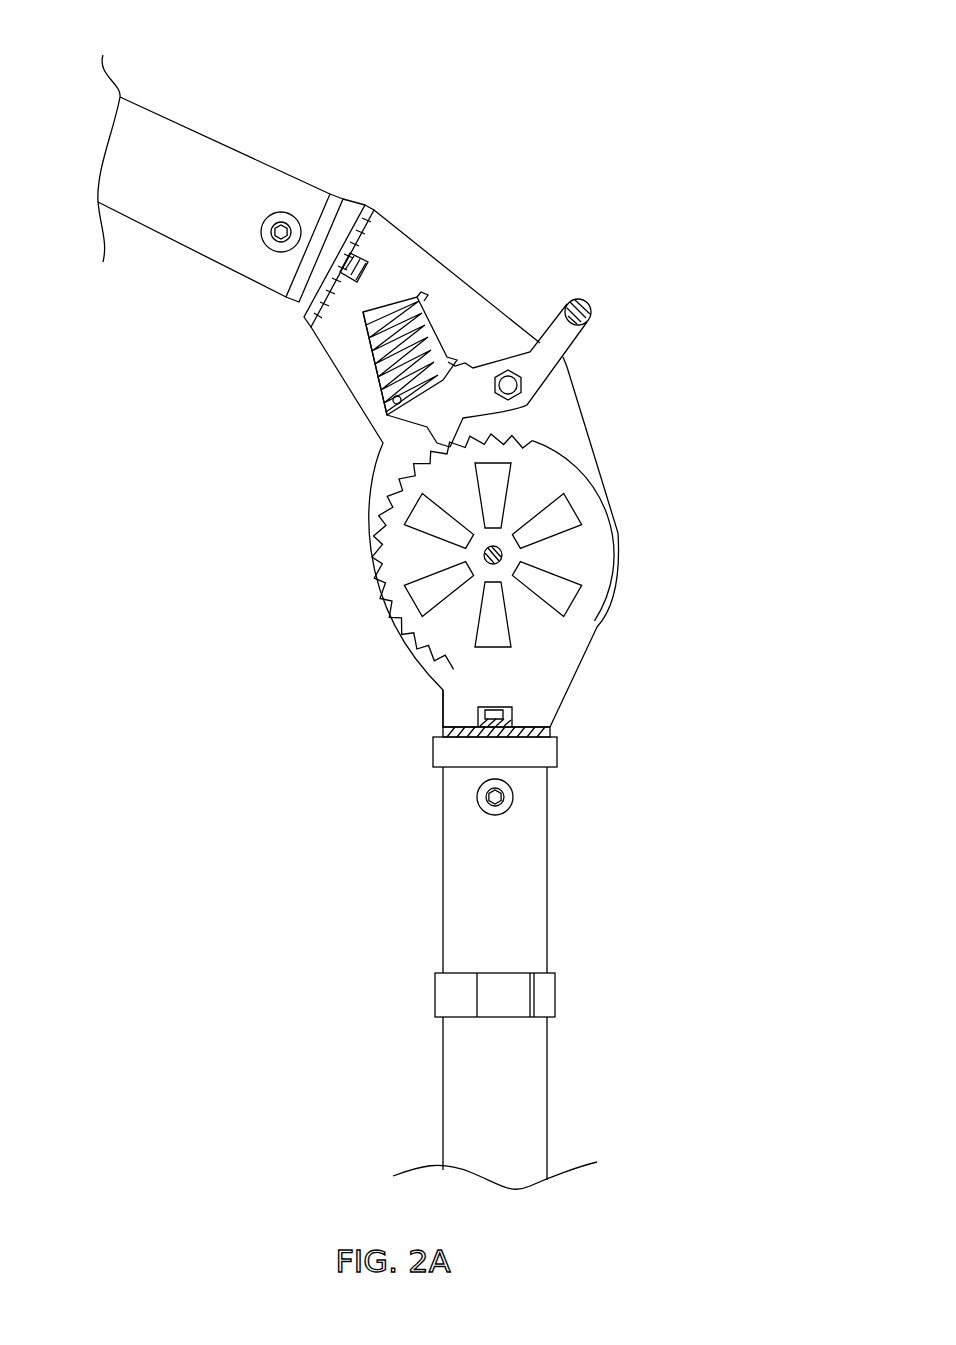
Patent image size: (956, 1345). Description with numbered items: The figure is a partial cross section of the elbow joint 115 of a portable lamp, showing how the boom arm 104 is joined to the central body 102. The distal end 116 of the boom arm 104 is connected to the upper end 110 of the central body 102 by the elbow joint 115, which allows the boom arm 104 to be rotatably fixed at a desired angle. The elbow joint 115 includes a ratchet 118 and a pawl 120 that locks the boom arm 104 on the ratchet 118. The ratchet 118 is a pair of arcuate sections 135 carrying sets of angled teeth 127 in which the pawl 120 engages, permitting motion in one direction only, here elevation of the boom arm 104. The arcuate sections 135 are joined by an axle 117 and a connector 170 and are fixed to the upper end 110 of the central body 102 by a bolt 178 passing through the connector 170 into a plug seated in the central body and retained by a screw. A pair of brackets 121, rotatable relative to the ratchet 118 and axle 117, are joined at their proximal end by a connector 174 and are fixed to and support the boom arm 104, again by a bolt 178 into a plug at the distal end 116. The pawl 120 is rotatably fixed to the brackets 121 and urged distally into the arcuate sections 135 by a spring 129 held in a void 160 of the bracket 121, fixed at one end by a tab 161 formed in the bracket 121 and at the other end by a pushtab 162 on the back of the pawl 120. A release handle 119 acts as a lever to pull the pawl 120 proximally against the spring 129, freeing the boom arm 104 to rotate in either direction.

The central body 102 is at (515, 978).
The boom arm 104 is at (141, 93).
The upper end 110 is at (548, 793).
The elbow joint 115 is at (524, 427).
The distal end 116 is at (343, 198).
The axle 117 is at (501, 546).
The ratchet 118 is at (568, 660).
The release handle 119 is at (591, 301).
The pawl 120 is at (470, 393).
The brackets 121 is at (427, 273).
The angled teeth 127 is at (392, 628).
The spring 129 is at (380, 362).
The arcuate sections 135 is at (390, 567).
The void 160 is at (418, 298).
The tab 161 is at (393, 310).
The pushtab 162 is at (405, 422).
The connector 170 is at (440, 728).
The connector 174 is at (366, 204).
The bolt 178 is at (370, 258).